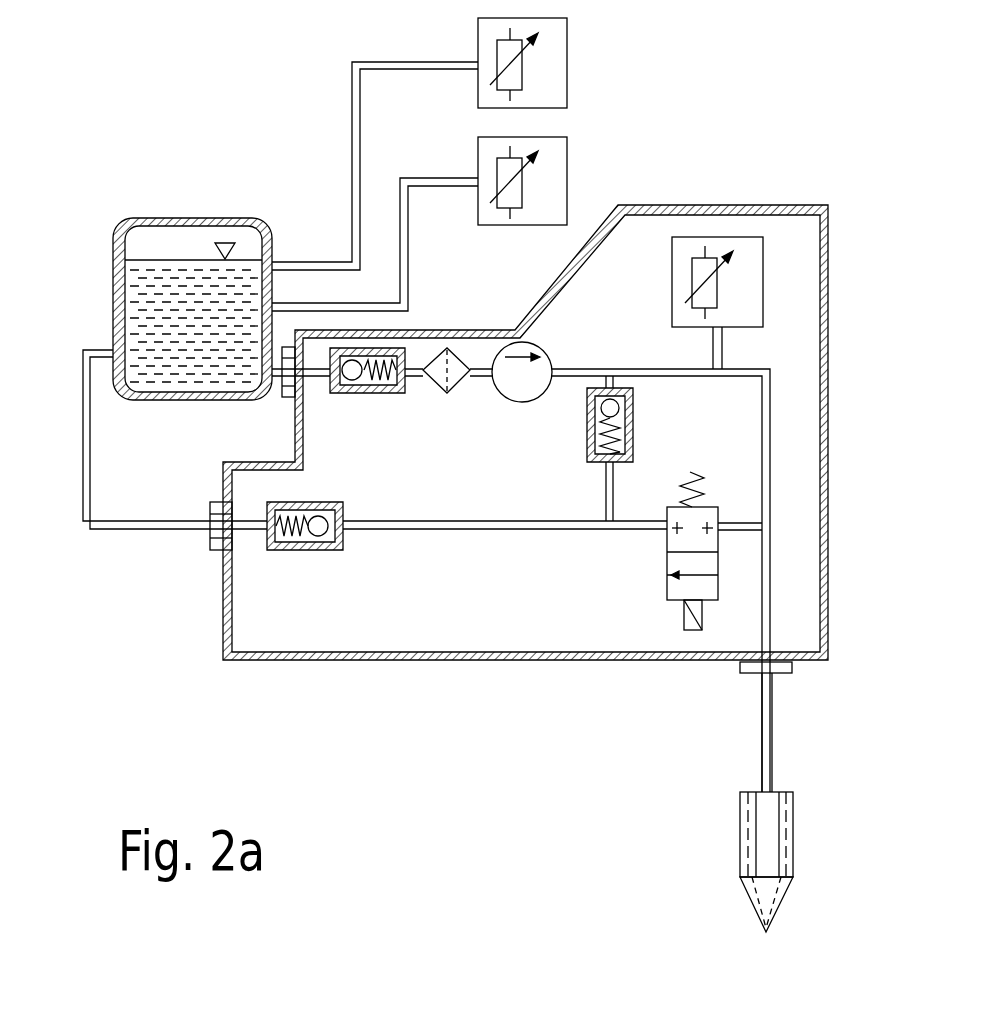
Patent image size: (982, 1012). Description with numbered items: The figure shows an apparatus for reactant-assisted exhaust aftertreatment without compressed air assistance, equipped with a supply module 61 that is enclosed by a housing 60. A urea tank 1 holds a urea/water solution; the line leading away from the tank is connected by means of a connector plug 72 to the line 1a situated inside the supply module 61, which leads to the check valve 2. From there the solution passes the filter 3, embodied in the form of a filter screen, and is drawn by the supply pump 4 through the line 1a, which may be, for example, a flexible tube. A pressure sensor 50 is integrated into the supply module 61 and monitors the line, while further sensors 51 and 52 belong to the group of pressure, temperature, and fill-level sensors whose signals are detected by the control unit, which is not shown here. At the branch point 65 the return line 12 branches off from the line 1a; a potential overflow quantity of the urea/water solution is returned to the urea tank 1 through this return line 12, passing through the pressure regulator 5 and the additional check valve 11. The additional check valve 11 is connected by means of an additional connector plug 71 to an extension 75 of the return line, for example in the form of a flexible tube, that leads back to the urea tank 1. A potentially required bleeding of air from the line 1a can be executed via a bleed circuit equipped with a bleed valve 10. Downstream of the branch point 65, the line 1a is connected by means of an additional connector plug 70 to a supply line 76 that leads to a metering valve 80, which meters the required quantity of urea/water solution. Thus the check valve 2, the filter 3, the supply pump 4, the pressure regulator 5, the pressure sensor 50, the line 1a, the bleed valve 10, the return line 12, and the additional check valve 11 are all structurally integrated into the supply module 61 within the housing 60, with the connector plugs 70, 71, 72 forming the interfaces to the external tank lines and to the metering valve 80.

The urea tank 1 is at (190, 218).
The line 1a is at (763, 424).
The check valve 2 is at (381, 395).
The filter 3 is at (443, 395).
The supply pump 4 is at (523, 393).
The pressure regulator 5 is at (597, 390).
The bleed valve 10 is at (677, 589).
The additional check valve 11 is at (302, 550).
The return line 12 is at (474, 532).
The pressure sensor 50 is at (682, 276).
The sensor 51 is at (567, 160).
The sensor 52 is at (567, 47).
The housing 60 is at (829, 227).
The supply module 61 is at (778, 342).
The branch point 65 is at (768, 530).
The additional connector plug 70 is at (783, 668).
The additional connector plug 71 is at (218, 536).
The connector plug 72 is at (283, 396).
The extension of the return line 75 is at (107, 527).
The supply line 76 is at (767, 727).
The metering valve 80 is at (773, 833).